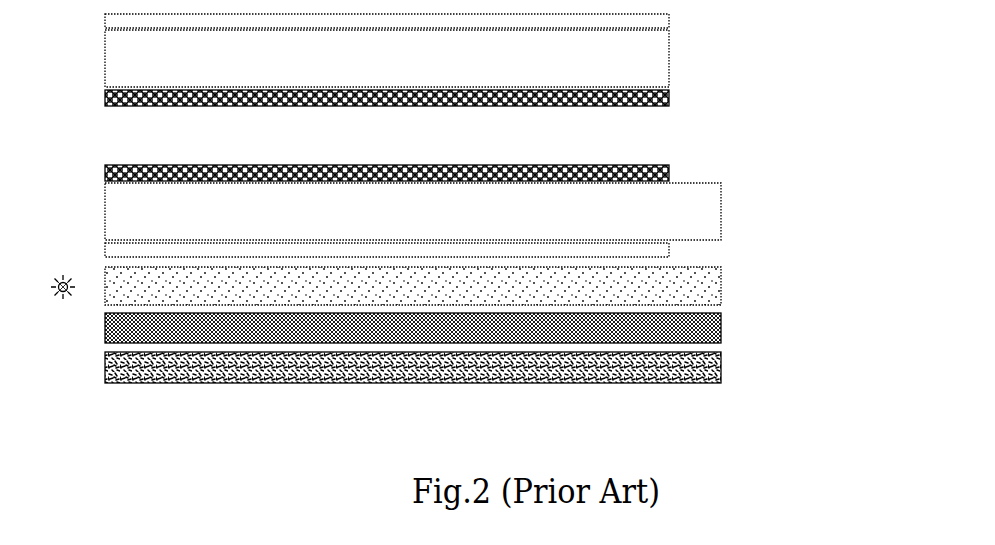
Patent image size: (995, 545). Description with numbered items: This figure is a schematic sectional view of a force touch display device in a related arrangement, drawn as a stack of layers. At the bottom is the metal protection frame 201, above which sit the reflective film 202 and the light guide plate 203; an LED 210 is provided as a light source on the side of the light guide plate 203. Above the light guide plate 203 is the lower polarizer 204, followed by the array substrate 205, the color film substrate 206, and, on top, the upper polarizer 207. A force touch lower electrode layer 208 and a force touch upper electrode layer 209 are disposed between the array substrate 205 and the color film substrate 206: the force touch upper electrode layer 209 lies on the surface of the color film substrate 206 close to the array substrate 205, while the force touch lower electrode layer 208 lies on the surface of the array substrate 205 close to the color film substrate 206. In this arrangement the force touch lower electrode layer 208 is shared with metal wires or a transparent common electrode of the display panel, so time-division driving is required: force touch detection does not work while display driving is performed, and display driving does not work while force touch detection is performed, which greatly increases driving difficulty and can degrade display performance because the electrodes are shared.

The metal protection frame 201 is at (721, 366).
The reflective film 202 is at (721, 327).
The light guide plate 203 is at (721, 287).
The lower polarizer 204 is at (669, 250).
The array substrate 205 is at (721, 212).
The color film substrate 206 is at (669, 61).
The upper polarizer 207 is at (669, 21).
The force touch lower electrode layer 208 is at (669, 173).
The force touch upper electrode layer 209 is at (669, 99).
The LED 210 is at (70, 302).